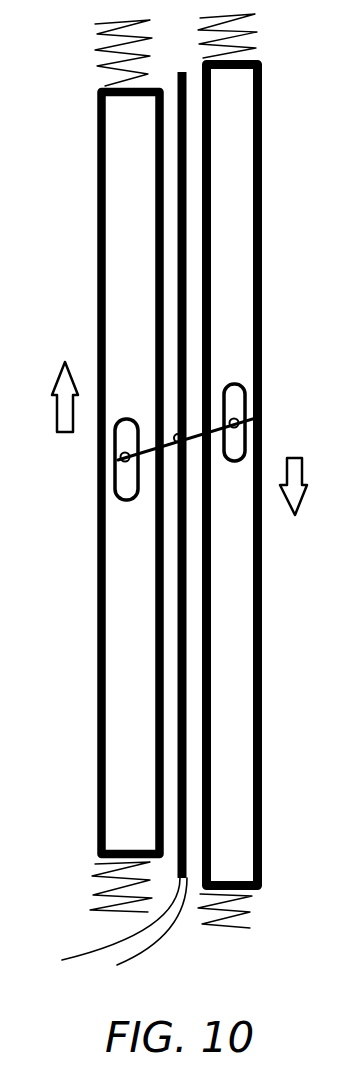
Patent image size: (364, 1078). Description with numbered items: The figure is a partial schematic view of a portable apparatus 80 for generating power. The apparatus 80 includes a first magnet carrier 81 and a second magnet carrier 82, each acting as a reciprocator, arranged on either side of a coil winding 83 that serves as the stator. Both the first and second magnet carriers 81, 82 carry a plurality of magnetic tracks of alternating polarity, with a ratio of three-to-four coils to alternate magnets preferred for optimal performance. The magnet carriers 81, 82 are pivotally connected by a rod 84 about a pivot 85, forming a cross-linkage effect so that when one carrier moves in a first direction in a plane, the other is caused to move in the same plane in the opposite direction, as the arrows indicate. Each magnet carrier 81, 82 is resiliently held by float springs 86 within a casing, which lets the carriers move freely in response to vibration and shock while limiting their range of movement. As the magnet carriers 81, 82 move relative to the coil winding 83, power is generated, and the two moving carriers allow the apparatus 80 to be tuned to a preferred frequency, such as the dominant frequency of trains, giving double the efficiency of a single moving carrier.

The apparatus for generating power 80 is at (176, 512).
The first magnet carrier 81 is at (112, 608).
The second magnet carrier 82 is at (243, 608).
The coil winding 83 is at (184, 233).
The rod 84 is at (232, 435).
The pivot 85 is at (176, 444).
The float springs 86 is at (100, 885).